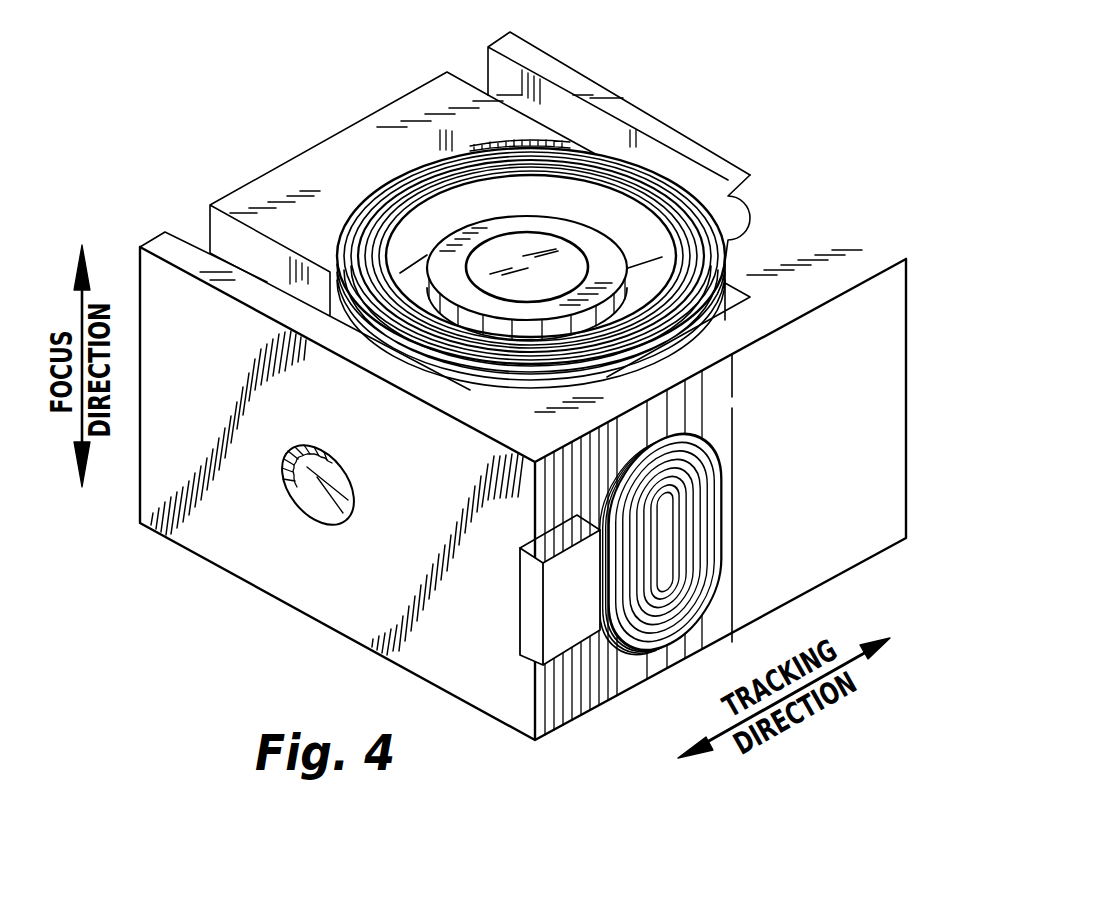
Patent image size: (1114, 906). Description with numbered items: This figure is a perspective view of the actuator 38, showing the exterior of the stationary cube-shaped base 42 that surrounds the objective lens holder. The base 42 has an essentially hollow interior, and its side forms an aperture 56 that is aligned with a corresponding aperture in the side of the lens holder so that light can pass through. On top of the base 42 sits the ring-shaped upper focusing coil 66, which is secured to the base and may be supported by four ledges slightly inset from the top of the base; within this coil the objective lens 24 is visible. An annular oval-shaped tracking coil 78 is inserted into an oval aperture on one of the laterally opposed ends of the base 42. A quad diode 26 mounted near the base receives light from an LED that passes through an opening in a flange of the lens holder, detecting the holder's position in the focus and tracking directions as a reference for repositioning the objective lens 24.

The objective lens 24 is at (575, 252).
The quad diode 26 is at (522, 600).
The actuator 38 is at (612, 386).
The base 42 is at (906, 491).
The aperture 56 is at (293, 504).
The focusing coil 66 is at (680, 218).
The tracking coil 78 is at (713, 510).